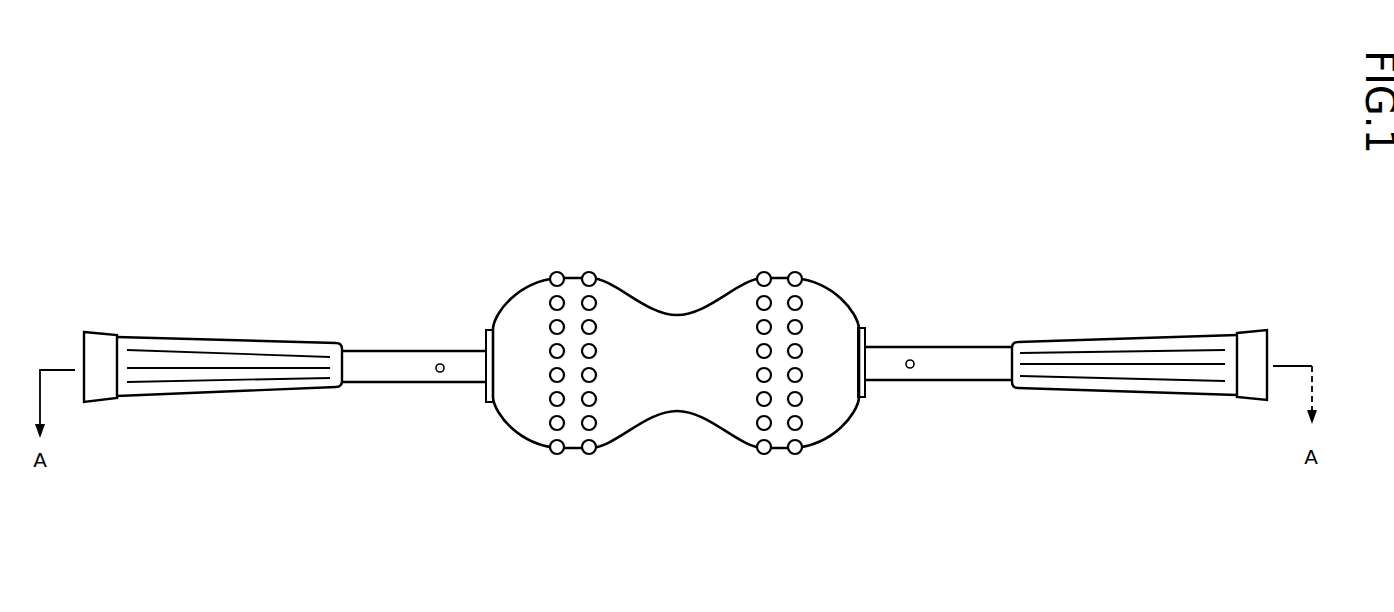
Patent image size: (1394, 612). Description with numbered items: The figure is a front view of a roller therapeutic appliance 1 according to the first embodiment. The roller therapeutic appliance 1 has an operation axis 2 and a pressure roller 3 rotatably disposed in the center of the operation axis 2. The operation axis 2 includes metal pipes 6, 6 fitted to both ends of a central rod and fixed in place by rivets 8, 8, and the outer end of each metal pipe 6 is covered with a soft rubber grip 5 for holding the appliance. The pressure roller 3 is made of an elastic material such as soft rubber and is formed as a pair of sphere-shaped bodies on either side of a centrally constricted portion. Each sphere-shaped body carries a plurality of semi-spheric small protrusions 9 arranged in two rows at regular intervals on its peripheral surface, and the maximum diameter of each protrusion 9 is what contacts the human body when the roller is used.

The roller therapeutic appliance 1 is at (970, 505).
The operation axis 2 is at (675, 389).
The pressure roller 3 is at (676, 361).
The soft rubber grip 5 is at (225, 345).
The metal pipe 6 is at (373, 360).
The rivet 8 is at (443, 364).
The semi-spheric small protrusion 9 is at (556, 272).